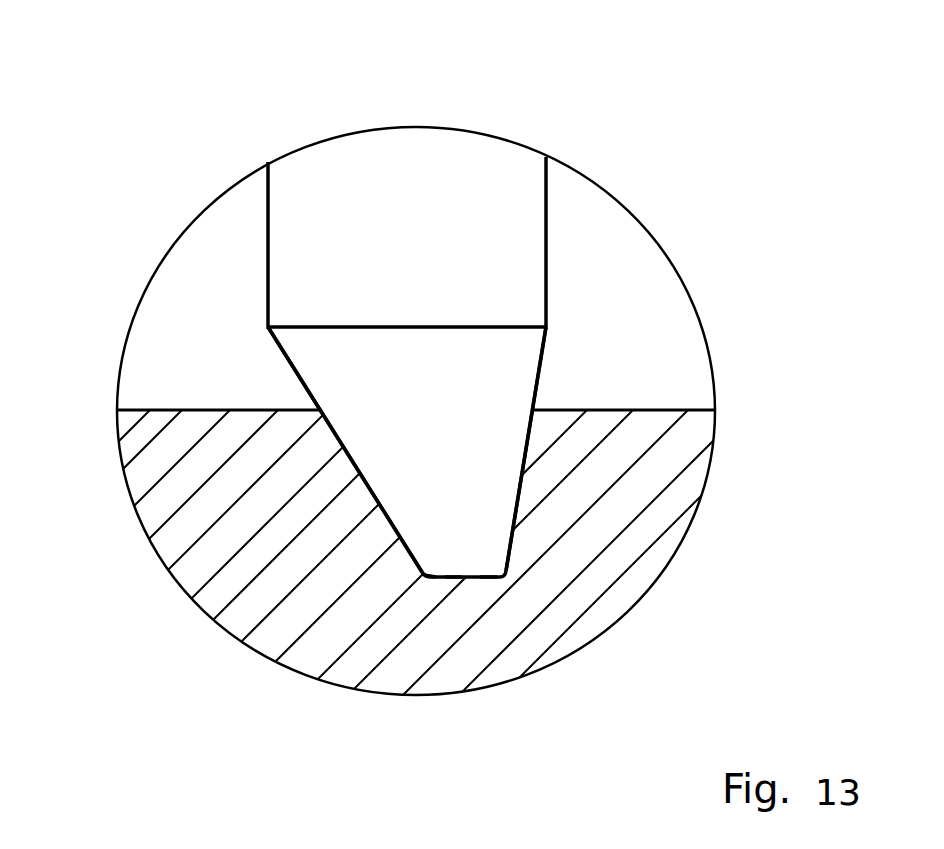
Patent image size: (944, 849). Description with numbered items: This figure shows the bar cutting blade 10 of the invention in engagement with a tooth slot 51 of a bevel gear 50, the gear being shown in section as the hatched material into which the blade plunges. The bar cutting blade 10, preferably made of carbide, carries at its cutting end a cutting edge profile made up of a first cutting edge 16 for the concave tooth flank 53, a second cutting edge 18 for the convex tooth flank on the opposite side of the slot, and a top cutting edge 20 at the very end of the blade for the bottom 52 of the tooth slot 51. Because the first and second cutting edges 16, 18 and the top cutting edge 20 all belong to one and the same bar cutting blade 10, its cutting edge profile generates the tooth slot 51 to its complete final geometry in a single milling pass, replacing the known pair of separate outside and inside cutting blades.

The bar cutting blade 10 is at (403, 167).
The first cutting edge 16 is at (370, 494).
The second cutting edge 18 is at (520, 497).
The top cutting edge 20 is at (433, 579).
The bevel gear 50 is at (633, 580).
The tooth slot 51 is at (488, 590).
The bottom 52 is at (453, 579).
The concave tooth flank 53 is at (430, 578).